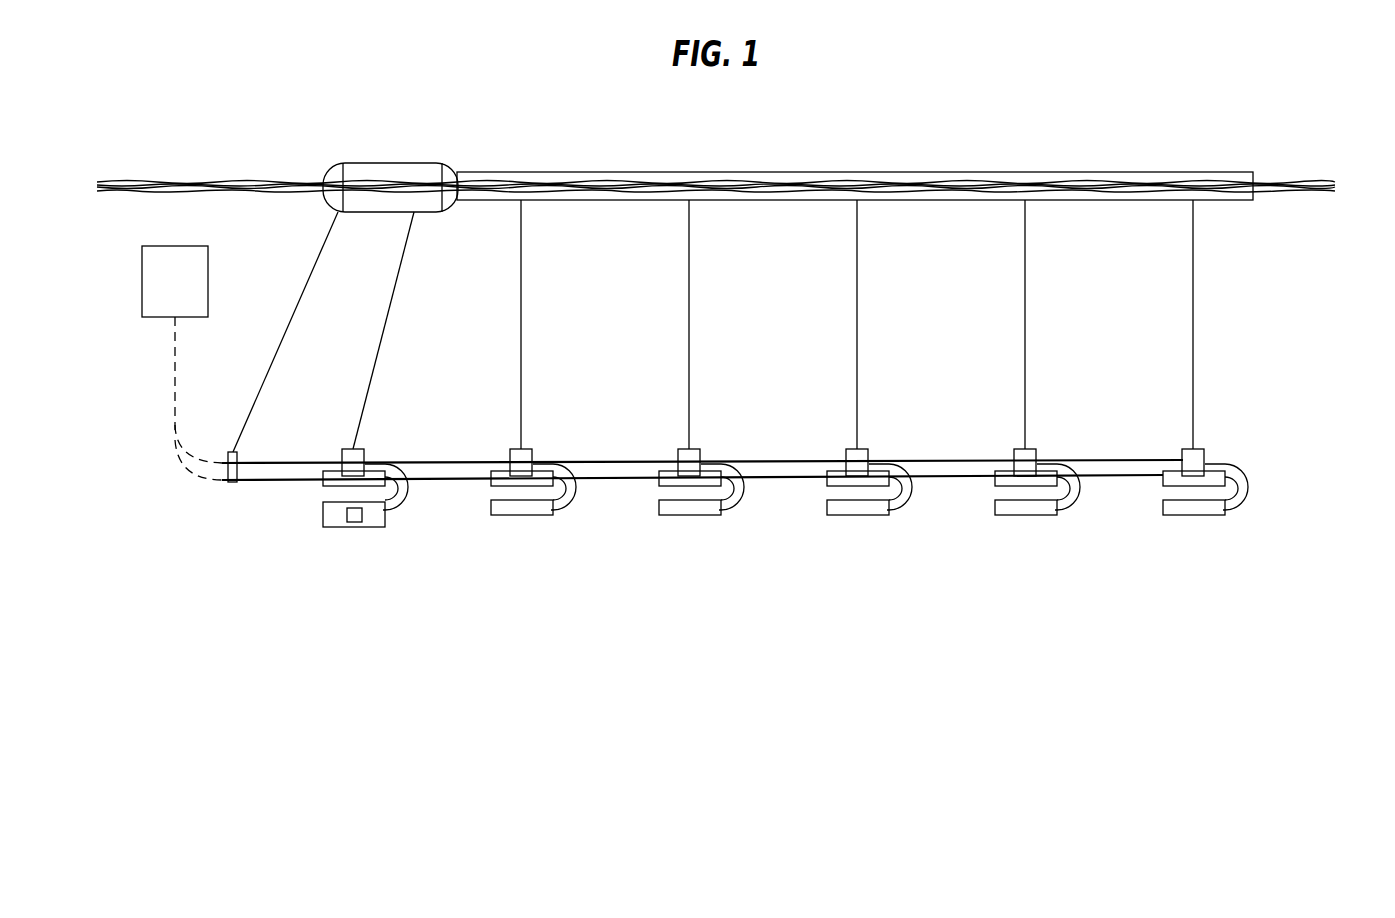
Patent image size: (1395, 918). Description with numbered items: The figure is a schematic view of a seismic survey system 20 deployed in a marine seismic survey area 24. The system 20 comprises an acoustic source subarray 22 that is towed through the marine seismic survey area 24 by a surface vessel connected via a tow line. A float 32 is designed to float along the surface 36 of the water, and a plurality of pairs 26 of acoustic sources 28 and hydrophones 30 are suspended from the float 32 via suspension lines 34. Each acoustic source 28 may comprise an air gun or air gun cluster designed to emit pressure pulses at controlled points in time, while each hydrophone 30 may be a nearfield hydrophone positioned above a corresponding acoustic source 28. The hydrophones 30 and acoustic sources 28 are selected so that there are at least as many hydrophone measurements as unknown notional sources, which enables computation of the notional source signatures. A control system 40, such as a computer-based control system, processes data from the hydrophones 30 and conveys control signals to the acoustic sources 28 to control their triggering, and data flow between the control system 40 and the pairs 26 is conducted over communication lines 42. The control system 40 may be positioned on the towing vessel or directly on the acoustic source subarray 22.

The seismic survey system 20 is at (1140, 128).
The acoustic source subarray 22 is at (236, 501).
The marine seismic survey area 24 is at (1268, 355).
The pairs of acoustic sources and hydrophones 26 is at (311, 517).
The acoustic source 28 is at (511, 527).
The hydrophone 30 is at (509, 462).
The float 32 is at (727, 172).
The suspension lines 34 is at (315, 277).
The surface of the water 36 is at (163, 184).
The control system 40 is at (160, 295).
The communication lines 42 is at (170, 370).